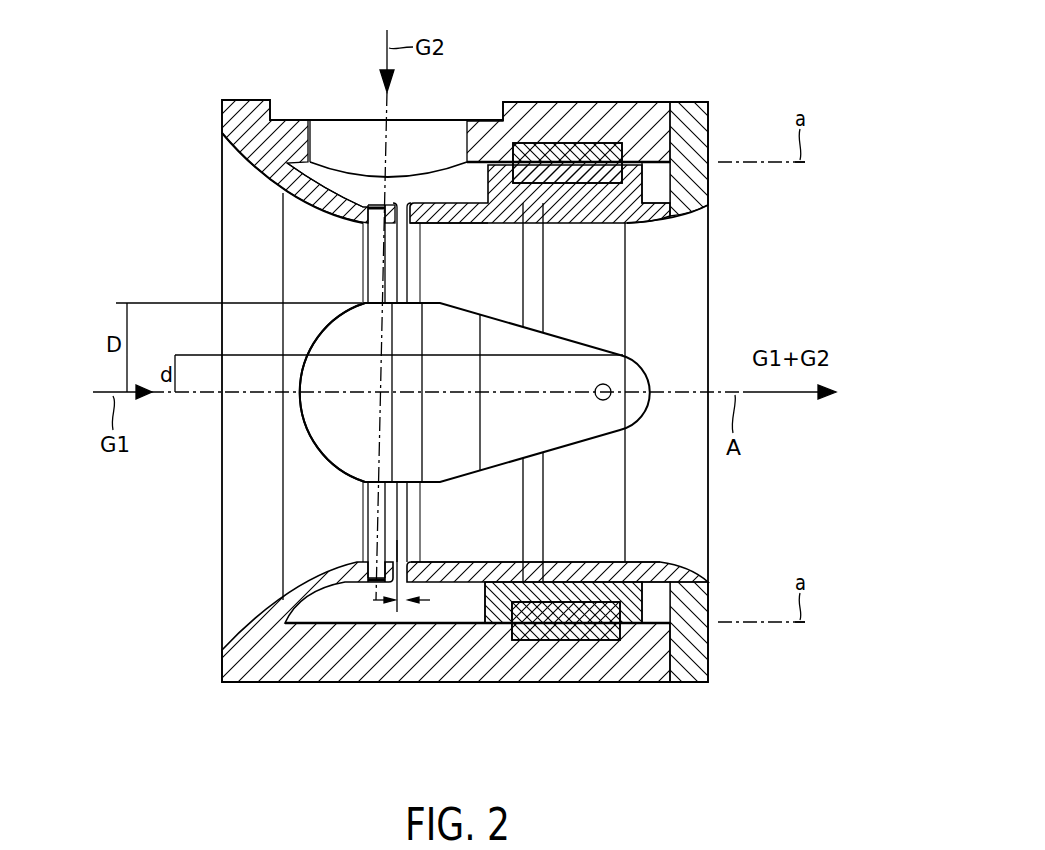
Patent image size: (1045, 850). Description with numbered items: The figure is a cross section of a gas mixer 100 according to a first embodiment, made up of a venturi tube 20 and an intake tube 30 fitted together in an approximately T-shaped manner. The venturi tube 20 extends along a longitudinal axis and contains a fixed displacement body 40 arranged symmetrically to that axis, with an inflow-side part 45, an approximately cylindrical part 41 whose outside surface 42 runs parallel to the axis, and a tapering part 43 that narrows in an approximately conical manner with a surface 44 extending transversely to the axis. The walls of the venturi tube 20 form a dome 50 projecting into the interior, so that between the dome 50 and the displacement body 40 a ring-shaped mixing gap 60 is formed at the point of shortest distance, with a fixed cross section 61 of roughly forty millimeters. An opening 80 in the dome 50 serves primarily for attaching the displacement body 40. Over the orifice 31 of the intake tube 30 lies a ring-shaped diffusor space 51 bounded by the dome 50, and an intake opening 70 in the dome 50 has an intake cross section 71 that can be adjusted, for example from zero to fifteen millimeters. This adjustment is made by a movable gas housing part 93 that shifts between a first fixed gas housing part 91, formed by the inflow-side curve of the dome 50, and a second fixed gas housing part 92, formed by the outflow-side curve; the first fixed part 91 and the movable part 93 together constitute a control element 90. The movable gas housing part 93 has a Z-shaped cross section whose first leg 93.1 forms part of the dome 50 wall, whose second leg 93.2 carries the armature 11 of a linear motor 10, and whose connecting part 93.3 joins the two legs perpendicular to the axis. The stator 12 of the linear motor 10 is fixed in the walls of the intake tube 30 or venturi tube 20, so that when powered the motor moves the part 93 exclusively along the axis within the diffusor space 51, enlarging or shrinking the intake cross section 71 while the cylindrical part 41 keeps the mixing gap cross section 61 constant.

The gas mixer 100 is at (805, 62).
The venturi tube 20 is at (706, 125).
The intake tube 30 is at (541, 118).
The orifice 31 is at (410, 172).
The linear motor 10 is at (601, 152).
The armature 11 is at (606, 600).
The stator 12 is at (577, 638).
The first fixed gas housing part 91 is at (247, 150).
The second fixed gas housing part 92 is at (663, 218).
The movable gas housing part 93 is at (490, 225).
The first leg 93.1 is at (473, 583).
The second leg 93.2 is at (573, 590).
The connecting part 93.3 is at (502, 600).
The dome 50 is at (300, 213).
The diffusor space 51 is at (458, 197).
The mixing gap 60 is at (421, 252).
The cross section 61 is at (464, 519).
The intake opening 70 is at (385, 203).
The intake cross section 71 is at (430, 600).
The opening 80 is at (372, 583).
The control element 90 is at (414, 547).
The displacement body 40 is at (318, 428).
The cylindrical part 41 is at (419, 435).
The outside surface 42 is at (400, 305).
The tapering part 43 is at (524, 385).
The surface 44 is at (557, 338).
The inflow-side part 45 is at (352, 381).